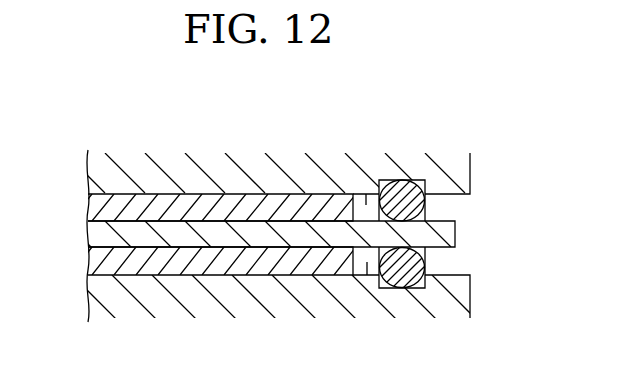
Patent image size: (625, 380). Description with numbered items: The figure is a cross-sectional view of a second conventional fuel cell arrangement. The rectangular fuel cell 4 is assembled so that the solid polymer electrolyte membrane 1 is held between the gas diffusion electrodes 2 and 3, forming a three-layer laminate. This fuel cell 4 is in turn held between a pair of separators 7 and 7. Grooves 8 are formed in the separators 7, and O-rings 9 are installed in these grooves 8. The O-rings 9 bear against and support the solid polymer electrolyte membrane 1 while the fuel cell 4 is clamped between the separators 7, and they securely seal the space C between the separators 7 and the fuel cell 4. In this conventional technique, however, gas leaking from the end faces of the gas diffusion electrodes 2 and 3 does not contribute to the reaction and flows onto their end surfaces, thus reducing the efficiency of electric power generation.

The solid polymer electrolyte membrane 1 is at (212, 228).
The gas diffusion electrode 2 is at (192, 119).
The gas diffusion electrode 3 is at (241, 267).
The fuel cell 4 is at (260, 173).
The separator 7 is at (463, 167).
The groove 8 is at (425, 192).
The O-ring 9 is at (400, 195).
The space C is at (366, 194).